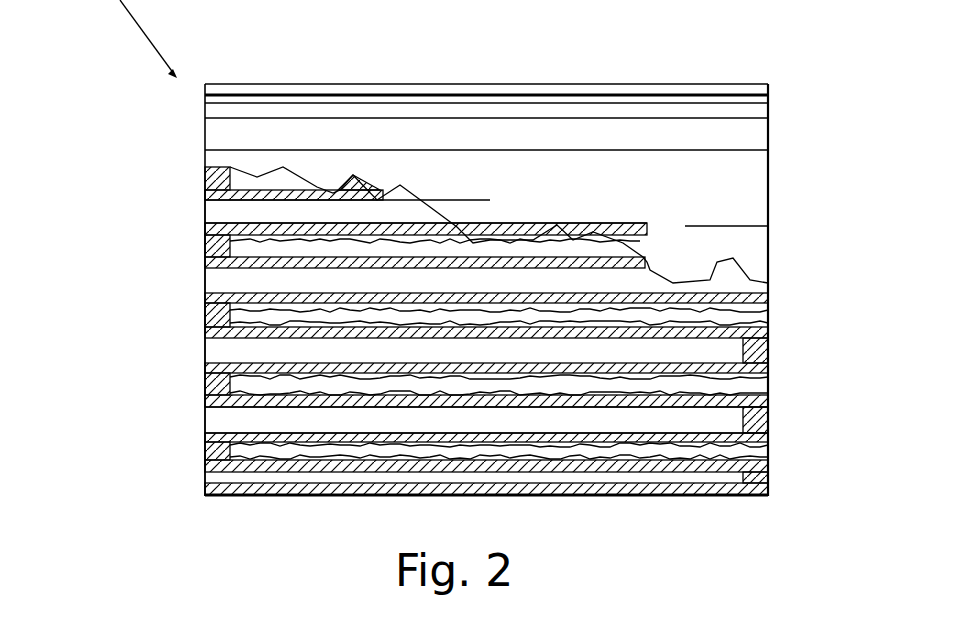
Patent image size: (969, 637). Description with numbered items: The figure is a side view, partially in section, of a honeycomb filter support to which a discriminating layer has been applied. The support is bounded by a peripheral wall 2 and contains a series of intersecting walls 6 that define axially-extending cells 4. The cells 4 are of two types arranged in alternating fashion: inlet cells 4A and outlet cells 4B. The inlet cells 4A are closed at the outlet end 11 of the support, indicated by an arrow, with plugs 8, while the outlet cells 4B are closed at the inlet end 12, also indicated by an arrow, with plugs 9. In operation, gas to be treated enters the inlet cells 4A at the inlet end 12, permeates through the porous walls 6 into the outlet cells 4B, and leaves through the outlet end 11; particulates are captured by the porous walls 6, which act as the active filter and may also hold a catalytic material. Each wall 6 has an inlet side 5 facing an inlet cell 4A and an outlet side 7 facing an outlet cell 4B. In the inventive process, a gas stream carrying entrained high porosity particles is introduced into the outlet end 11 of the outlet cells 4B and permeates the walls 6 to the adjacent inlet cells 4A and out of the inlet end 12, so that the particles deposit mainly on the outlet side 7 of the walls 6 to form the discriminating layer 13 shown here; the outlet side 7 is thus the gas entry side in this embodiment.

The peripheral wall 2 is at (633, 216).
The axially-extending cells 4 is at (340, 283).
The inlet cells 4A is at (218, 213).
The outlet cells 4B is at (218, 176).
The inlet side 5 is at (703, 467).
The intersecting walls 6 is at (260, 290).
The outlet side 7 is at (613, 253).
The plugs 8 is at (768, 367).
The plugs 9 is at (207, 322).
The outlet end 11 is at (806, 186).
The inlet end 12 is at (114, 315).
The discriminating layer 13 is at (420, 233).